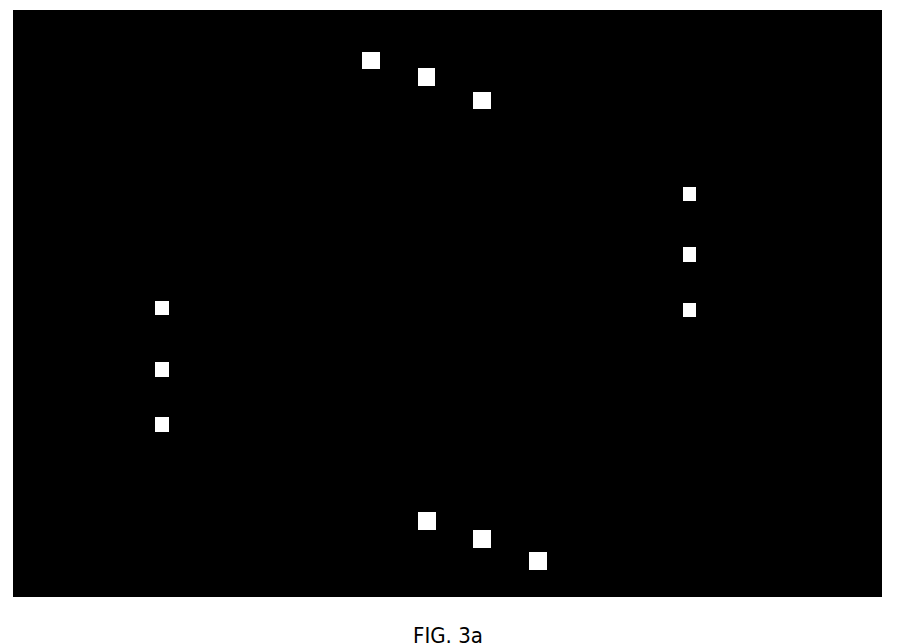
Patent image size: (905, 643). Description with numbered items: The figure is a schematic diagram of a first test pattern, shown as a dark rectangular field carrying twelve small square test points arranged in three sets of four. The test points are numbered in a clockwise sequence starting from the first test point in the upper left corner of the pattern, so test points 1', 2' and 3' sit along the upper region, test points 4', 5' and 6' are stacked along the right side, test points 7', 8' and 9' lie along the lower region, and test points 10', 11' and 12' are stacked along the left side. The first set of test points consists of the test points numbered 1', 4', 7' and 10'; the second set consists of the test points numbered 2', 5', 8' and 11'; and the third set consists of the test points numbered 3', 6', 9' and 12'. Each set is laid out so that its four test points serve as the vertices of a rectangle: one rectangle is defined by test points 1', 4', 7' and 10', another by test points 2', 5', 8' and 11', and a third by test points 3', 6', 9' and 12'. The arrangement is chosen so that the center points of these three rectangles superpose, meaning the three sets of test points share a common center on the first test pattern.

The test point 1' is at (379, 40).
The test point 2' is at (439, 59).
The test point 3' is at (494, 80).
The test point 4' is at (712, 190).
The test point 5' is at (713, 256).
The test point 6' is at (713, 314).
The test point 7' is at (546, 542).
The test point 8' is at (490, 519).
The test point 9' is at (434, 501).
The test point 10' is at (191, 425).
The test point 11' is at (191, 361).
The test point 12' is at (191, 300).